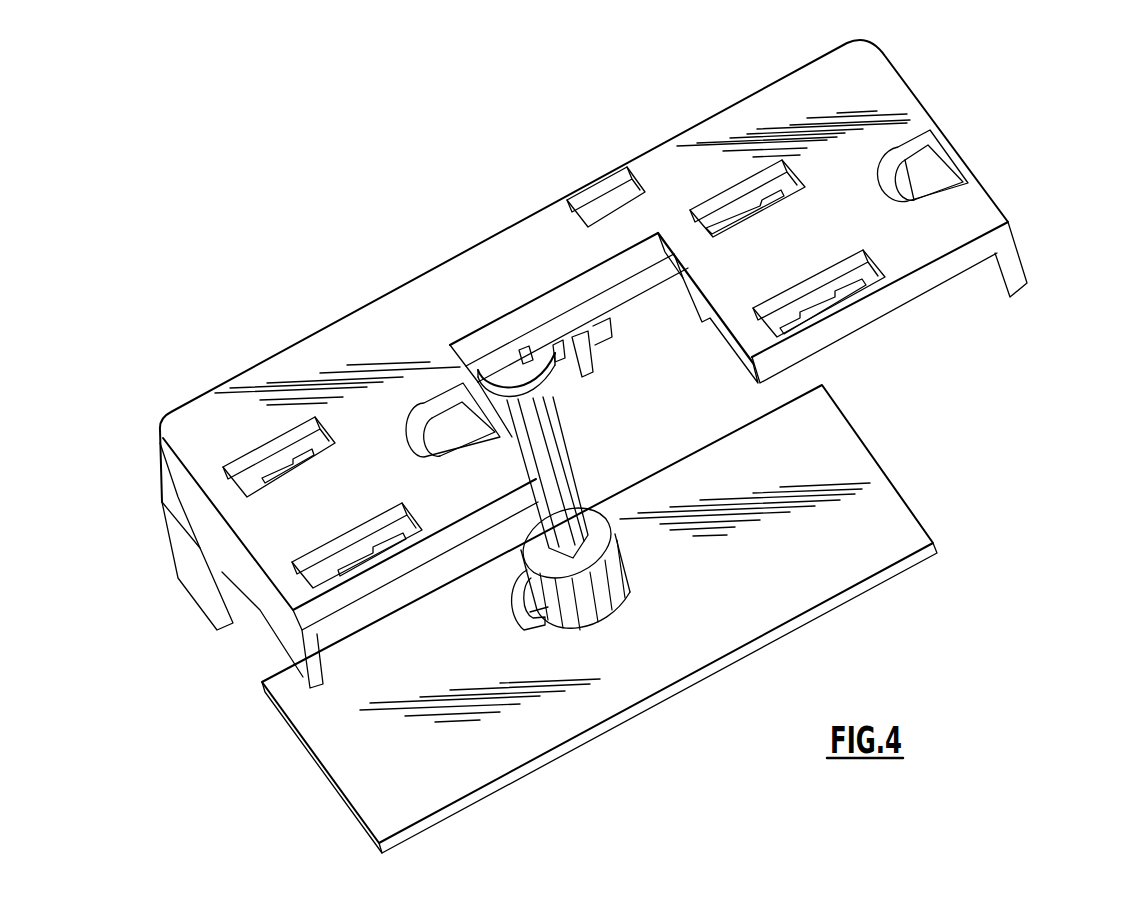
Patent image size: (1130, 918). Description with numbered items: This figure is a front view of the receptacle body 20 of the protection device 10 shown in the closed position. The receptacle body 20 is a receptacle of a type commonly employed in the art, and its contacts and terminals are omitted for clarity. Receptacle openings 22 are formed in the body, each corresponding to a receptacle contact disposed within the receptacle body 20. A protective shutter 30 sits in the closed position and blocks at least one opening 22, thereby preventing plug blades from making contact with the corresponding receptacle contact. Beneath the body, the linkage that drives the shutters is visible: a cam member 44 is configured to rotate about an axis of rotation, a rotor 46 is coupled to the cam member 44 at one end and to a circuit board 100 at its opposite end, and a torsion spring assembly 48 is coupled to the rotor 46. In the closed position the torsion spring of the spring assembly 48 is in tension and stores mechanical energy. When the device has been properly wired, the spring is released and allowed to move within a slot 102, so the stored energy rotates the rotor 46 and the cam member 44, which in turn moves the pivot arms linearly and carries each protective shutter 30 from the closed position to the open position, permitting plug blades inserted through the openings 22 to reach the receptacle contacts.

The protection device 10 is at (1044, 135).
The receptacle body 20 is at (893, 107).
The receptacle openings 22 is at (893, 193).
The protective shutter 30 is at (741, 216).
The cam member 44 is at (547, 377).
The rotor 46 is at (567, 473).
The torsion spring assembly 48 is at (623, 603).
The circuit board 100 is at (900, 542).
The slot 102 is at (512, 611).